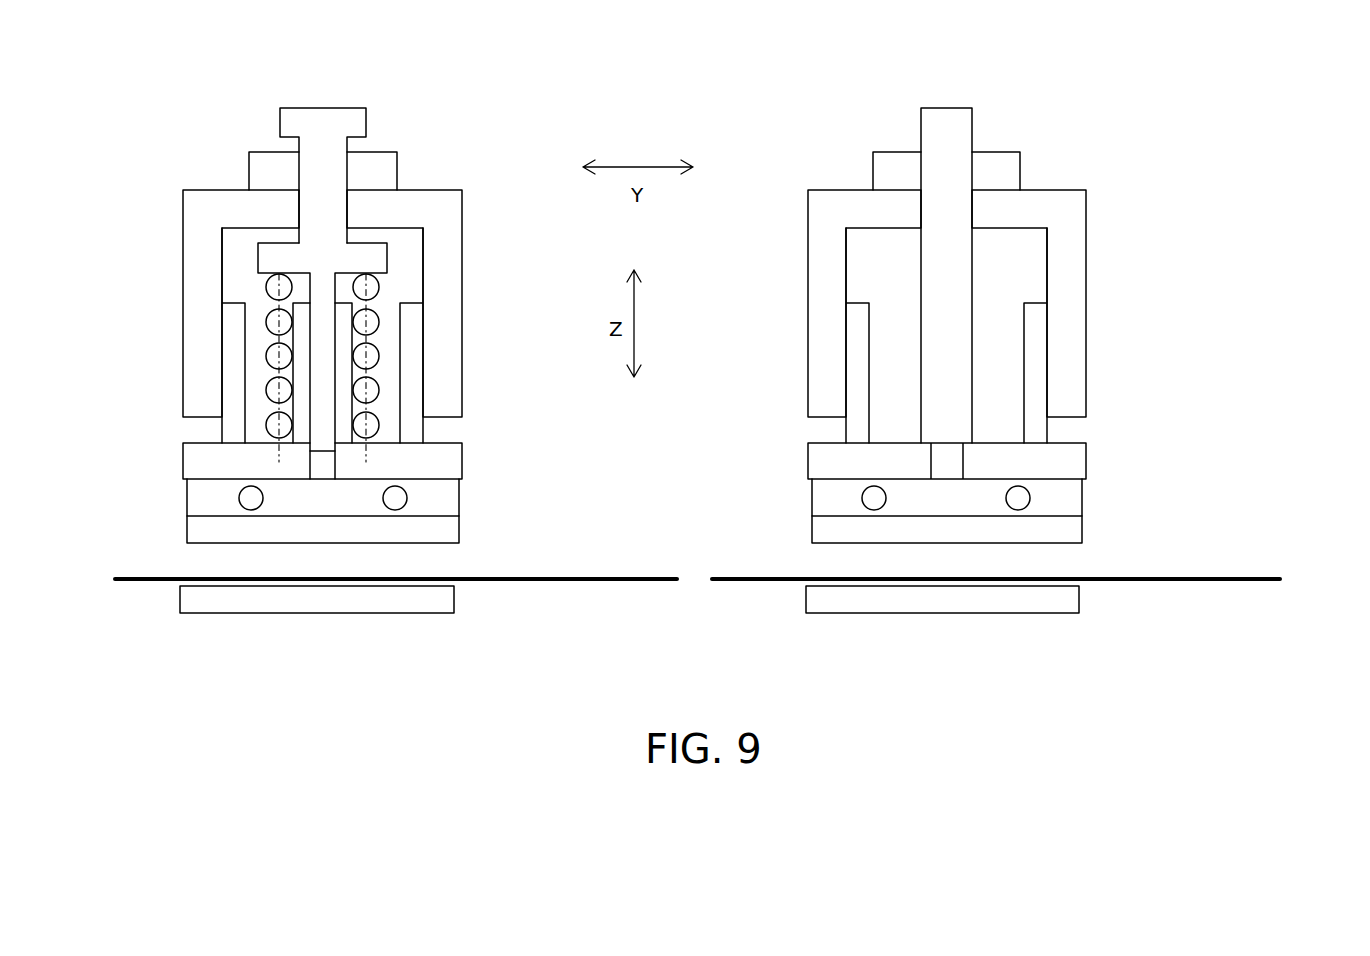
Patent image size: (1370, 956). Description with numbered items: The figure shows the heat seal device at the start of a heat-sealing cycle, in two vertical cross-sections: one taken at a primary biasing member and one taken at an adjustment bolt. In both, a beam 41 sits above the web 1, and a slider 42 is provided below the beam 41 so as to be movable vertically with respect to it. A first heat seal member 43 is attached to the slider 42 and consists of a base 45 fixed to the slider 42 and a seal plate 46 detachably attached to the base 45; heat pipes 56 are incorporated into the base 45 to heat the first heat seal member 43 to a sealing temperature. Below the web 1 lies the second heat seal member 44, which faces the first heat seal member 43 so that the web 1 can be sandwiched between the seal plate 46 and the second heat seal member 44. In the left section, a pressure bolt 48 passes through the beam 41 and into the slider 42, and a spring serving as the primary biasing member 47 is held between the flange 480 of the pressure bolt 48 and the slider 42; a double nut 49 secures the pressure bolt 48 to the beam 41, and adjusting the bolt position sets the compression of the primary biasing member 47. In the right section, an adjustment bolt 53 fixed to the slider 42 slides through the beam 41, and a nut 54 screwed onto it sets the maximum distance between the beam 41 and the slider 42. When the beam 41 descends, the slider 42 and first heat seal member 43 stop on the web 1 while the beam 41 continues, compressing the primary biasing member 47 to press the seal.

The web 1 is at (628, 577).
The beam 41 is at (445, 195).
The slider 42 is at (443, 455).
The first heat seal member 43 is at (705, 513).
The second heat seal member 44 is at (318, 603).
The base 45 is at (445, 493).
The seal plate 46 is at (445, 530).
The primary biasing member 47 is at (273, 358).
The pressure bolt 48 is at (287, 122).
The nut 49 is at (263, 169).
The flange 480 is at (267, 262).
The adjustment bolt 53 is at (937, 122).
The nut 54 is at (887, 169).
The heat pipe 56 is at (248, 498).